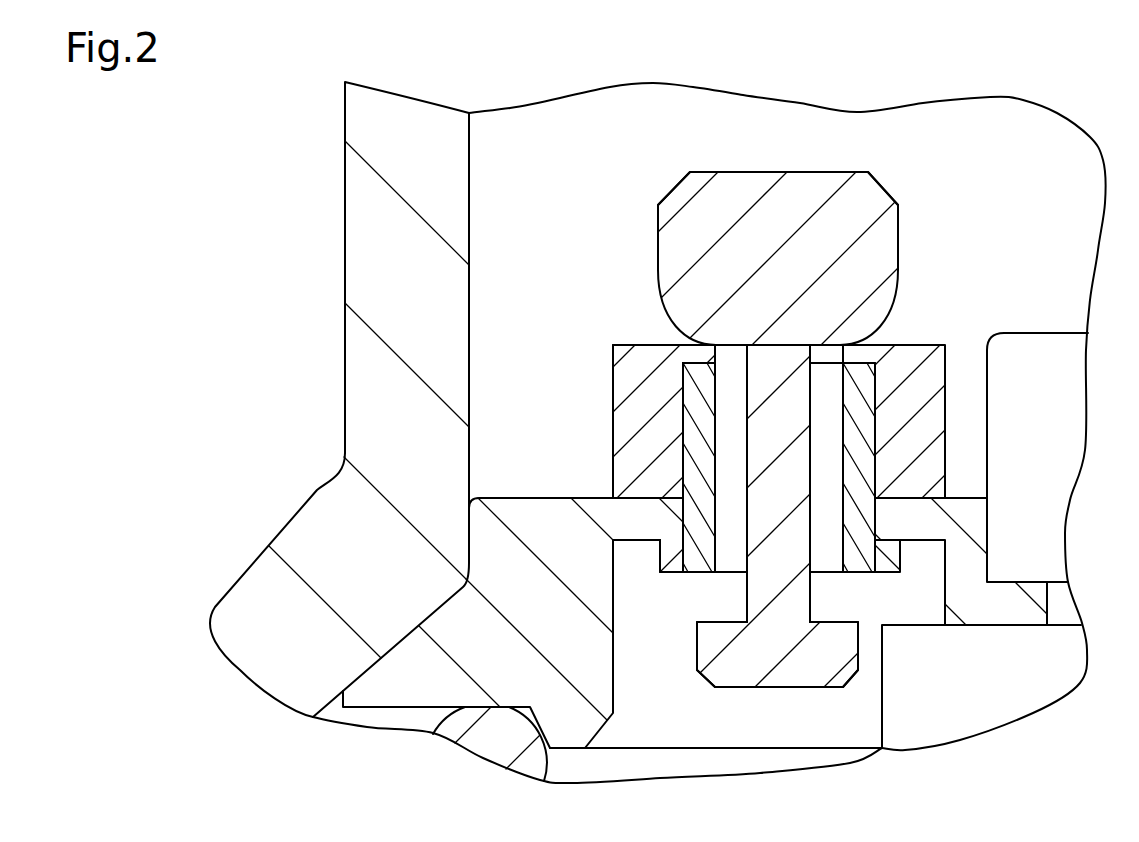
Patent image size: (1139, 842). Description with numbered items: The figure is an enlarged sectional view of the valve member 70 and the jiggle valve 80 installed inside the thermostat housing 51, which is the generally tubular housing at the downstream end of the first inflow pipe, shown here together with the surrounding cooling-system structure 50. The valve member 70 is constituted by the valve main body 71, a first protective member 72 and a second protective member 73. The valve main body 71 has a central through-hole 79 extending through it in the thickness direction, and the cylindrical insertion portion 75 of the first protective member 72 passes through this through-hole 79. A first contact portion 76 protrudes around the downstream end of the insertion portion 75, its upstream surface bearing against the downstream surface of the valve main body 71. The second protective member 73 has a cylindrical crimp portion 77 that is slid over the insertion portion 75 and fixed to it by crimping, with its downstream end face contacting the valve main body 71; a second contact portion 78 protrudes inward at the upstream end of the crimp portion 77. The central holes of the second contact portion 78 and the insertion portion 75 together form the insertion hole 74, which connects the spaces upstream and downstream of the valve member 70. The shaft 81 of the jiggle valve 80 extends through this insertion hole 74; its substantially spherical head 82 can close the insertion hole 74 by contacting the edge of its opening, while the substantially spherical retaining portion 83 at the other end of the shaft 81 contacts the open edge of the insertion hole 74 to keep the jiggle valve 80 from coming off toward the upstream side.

The case 50 is at (291, 319).
The thermostat housing 51 is at (345, 243).
The valve member 70 is at (1068, 214).
The valve main body 71 is at (954, 494).
The first protective member 72 is at (566, 439).
The second protective member 73 is at (556, 321).
The insertion hole 74 is at (838, 405).
The insertion portion 75 is at (693, 444).
The first contact portion 76 is at (672, 560).
The crimp portion 77 is at (638, 407).
The second contact portion 78 is at (700, 352).
The through-hole 79 is at (877, 520).
The jiggle valve 80 is at (859, 158).
The shaft 81 is at (758, 592).
The head 82 is at (888, 237).
The retaining portion 83 is at (787, 672).